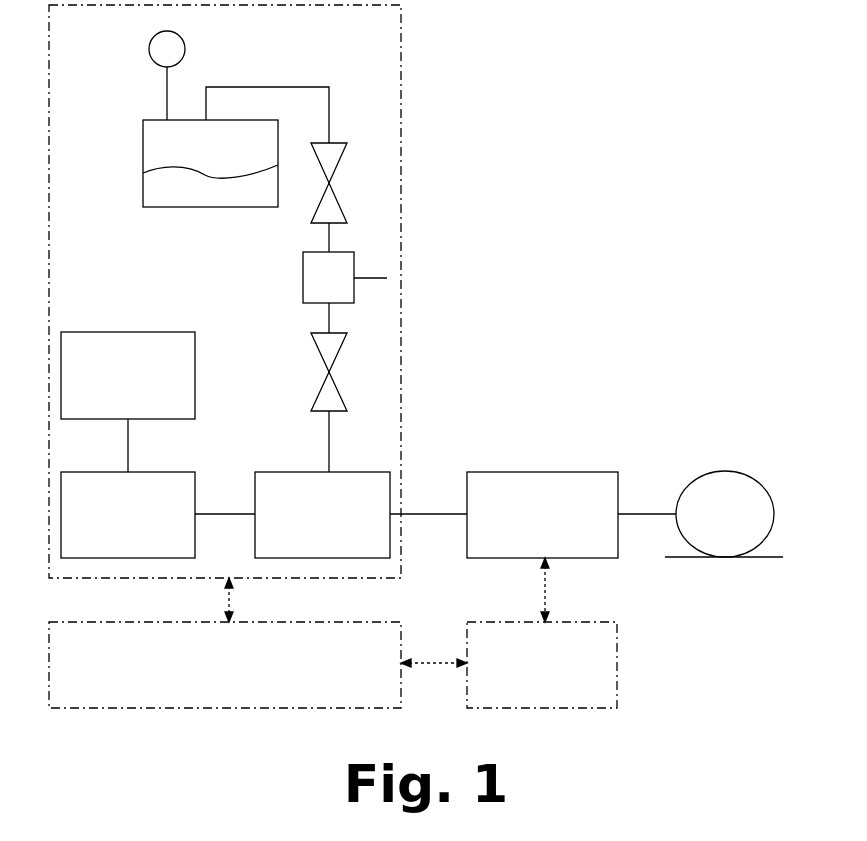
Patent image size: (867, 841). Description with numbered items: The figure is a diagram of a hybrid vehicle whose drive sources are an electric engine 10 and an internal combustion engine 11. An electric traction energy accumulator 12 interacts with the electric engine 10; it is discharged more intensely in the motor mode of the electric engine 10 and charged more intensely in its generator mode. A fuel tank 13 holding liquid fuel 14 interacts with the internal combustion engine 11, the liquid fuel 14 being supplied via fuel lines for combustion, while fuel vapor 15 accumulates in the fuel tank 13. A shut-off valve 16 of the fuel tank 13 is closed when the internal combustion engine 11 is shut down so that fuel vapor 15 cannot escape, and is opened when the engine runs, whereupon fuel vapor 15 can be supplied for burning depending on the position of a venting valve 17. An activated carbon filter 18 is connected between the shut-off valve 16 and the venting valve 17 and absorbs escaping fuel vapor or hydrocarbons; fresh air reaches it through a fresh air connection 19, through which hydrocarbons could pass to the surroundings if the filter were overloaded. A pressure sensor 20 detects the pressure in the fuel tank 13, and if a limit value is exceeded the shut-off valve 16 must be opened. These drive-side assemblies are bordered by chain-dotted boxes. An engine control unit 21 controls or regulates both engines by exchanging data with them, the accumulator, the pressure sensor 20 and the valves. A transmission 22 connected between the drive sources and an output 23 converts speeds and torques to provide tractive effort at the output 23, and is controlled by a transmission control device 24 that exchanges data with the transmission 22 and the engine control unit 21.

The electric engine 10 is at (114, 526).
The internal combustion engine 11 is at (308, 527).
The electric traction energy accumulator 12 is at (114, 386).
The fuel tank 13 is at (163, 218).
The liquid fuel 14 is at (213, 191).
The fuel vapor 15 is at (188, 147).
The shut-off valve 16 is at (355, 183).
The venting valve 17 is at (355, 372).
The activated carbon filter 18 is at (328, 277).
The fresh air connection 19 is at (375, 278).
The pressure sensor 20 is at (167, 49).
The engine control unit 21 is at (209, 681).
The transmission 22 is at (528, 527).
The output 23 is at (712, 527).
The transmission control device 24 is at (523, 681).